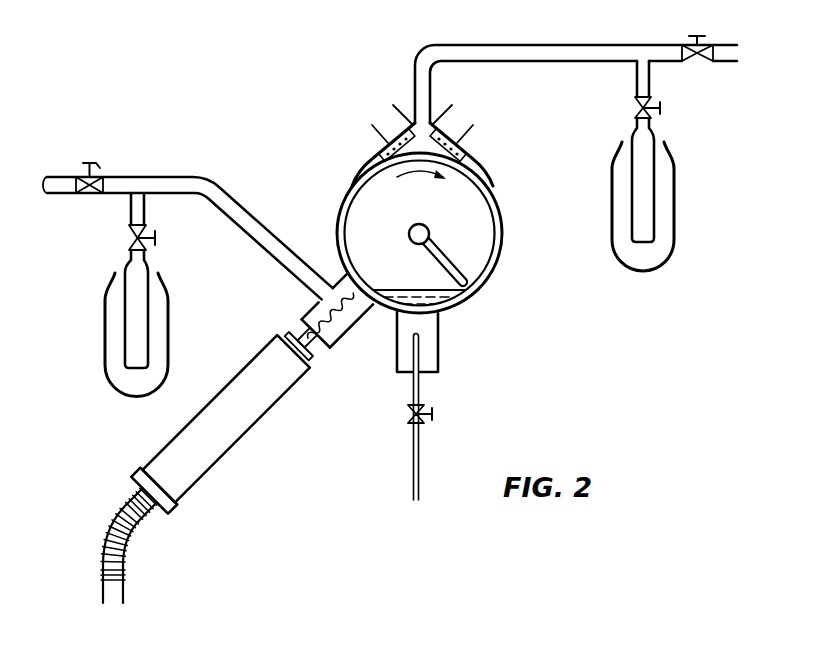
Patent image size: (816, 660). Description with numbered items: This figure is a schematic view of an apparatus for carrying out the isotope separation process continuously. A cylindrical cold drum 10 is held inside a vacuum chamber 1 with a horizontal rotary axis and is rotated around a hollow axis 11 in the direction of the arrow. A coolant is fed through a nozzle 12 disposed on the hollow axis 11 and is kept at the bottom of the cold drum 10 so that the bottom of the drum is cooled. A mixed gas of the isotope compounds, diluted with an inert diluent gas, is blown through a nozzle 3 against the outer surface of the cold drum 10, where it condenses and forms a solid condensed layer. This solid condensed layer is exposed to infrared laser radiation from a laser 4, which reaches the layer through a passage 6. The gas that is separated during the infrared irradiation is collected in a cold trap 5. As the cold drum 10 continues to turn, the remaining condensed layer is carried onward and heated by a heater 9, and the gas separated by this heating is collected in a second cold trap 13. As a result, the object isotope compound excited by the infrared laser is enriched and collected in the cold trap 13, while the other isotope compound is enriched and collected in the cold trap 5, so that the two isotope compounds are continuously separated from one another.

The vacuum chamber 1 is at (499, 200).
The nozzle 3 is at (419, 352).
The laser 4 is at (300, 372).
The cold trap 5 is at (150, 299).
The passage 6 is at (350, 330).
The heater 9 is at (419, 125).
The cylindrical cold drum 10 is at (458, 173).
The hollow axis 11 is at (428, 228).
The nozzle 12 is at (460, 262).
The cold trap 13 is at (648, 178).